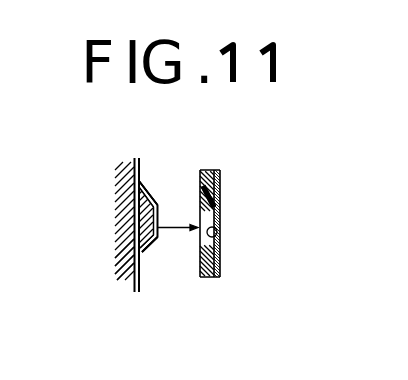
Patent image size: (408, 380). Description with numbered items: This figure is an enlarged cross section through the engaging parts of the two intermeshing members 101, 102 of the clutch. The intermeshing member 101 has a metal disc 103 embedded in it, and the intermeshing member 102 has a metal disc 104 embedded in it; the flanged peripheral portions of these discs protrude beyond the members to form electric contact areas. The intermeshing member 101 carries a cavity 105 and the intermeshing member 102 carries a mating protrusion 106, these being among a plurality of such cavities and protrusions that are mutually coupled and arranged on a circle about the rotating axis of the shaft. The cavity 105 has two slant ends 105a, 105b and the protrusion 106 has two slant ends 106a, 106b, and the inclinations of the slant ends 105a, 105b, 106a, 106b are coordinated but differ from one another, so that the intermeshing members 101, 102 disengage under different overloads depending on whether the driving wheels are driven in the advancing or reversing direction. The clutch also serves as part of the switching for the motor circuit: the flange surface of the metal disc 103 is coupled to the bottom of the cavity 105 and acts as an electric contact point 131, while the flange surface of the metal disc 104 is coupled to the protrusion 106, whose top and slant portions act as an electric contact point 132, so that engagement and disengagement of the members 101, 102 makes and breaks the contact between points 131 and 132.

The intermeshing member 101 is at (209, 172).
The intermeshing member 102 is at (133, 168).
The metal disc 103 is at (221, 199).
The metal disc 104 is at (131, 267).
The cavity 105 is at (200, 209).
The slant end of cavity 105a is at (220, 211).
The slant end of cavity 105b is at (201, 245).
The protrusion 106 is at (159, 239).
The slant end of protrusion 106a is at (153, 202).
The slant end of protrusion 106b is at (144, 259).
The electric contact point 131 is at (217, 240).
The electric contact point 132 is at (161, 224).